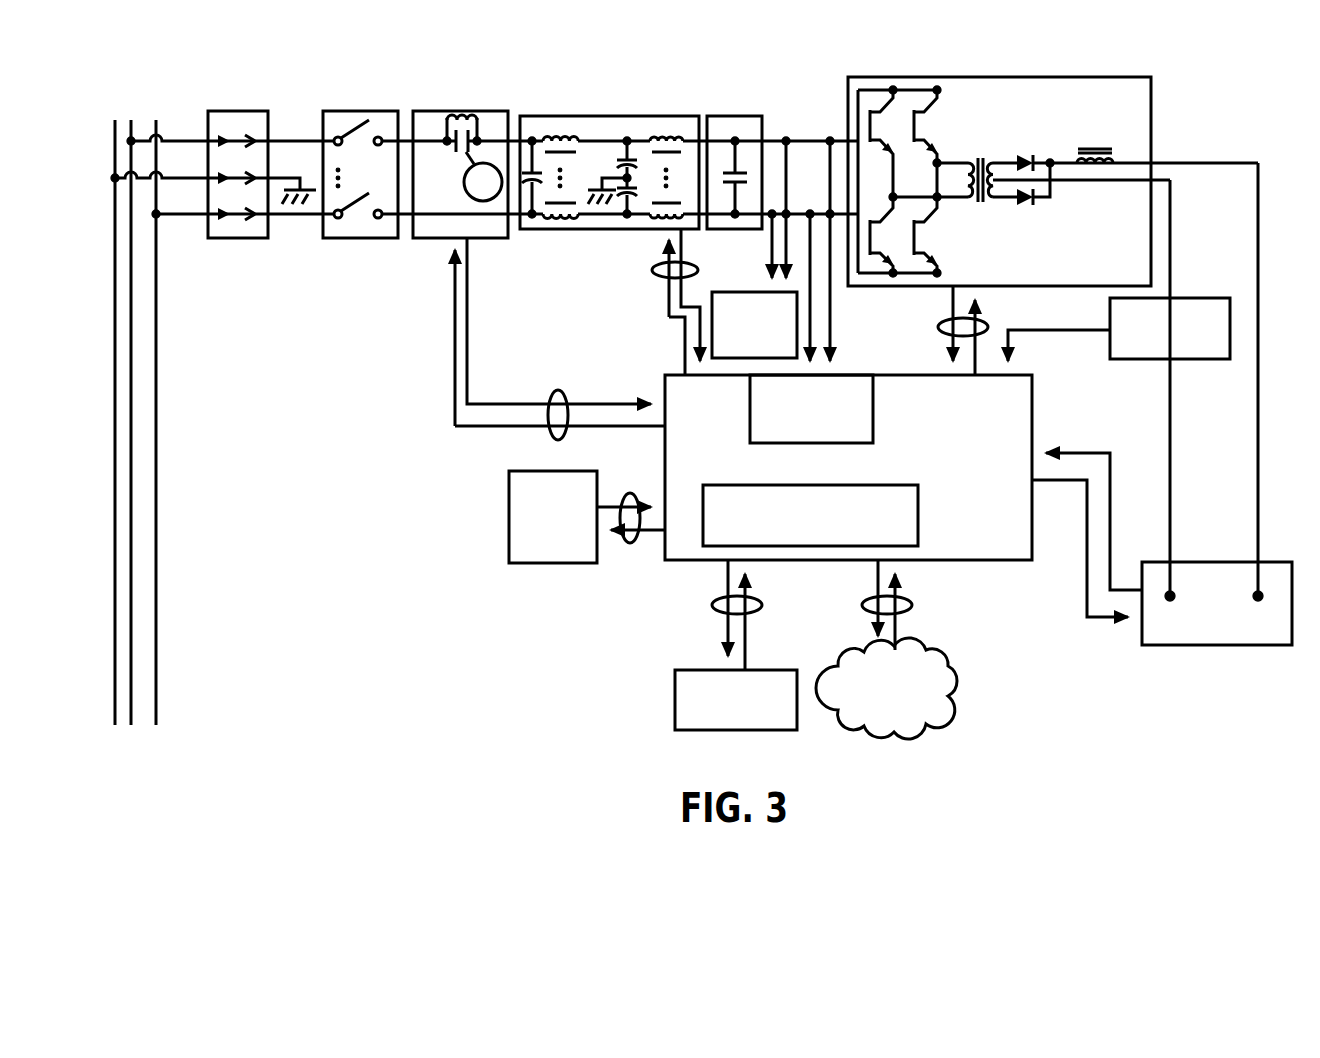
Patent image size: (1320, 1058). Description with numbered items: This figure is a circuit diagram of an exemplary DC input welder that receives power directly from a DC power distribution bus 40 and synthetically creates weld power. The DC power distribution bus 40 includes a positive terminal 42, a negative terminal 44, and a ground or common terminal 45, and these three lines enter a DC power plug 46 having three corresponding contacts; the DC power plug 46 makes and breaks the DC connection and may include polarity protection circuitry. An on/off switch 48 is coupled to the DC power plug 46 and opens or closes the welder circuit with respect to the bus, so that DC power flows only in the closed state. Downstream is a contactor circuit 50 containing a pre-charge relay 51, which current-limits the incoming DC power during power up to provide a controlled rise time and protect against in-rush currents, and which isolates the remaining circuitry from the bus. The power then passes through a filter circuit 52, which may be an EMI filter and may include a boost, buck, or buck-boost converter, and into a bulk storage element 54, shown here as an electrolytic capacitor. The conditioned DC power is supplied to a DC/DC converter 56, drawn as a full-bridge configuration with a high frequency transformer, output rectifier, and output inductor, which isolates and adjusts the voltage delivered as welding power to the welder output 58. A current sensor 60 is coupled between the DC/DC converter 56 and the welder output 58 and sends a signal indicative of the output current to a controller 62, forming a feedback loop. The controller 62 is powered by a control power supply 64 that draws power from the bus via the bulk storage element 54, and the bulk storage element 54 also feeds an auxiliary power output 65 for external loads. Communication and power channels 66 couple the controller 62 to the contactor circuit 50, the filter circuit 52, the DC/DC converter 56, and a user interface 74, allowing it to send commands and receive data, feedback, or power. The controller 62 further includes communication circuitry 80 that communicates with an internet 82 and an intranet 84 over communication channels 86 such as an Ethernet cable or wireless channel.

The DC power distribution bus 40 is at (145, 105).
The positive terminal 42 is at (131, 713).
The negative terminal 44 is at (156, 698).
The ground or common terminal 45 is at (115, 715).
The DC power plug 46 is at (238, 111).
The on/off switch 48 is at (355, 111).
The contactor circuit 50 is at (458, 187).
The pre-charge relay 51 is at (448, 194).
The filter circuit 52 is at (608, 116).
The bulk storage element 54 is at (735, 116).
The DC/DC converter 56 is at (1000, 77).
The welder output 58 is at (1215, 645).
The current sensor 60 is at (1140, 359).
The controller 62 is at (876, 467).
The control power supply 64 is at (873, 410).
The auxiliary power output 65 is at (757, 292).
The communication and power channels 66 is at (652, 270).
The user interface 74 is at (553, 471).
The communication circuitry 80 is at (765, 485).
The internet 82 is at (955, 680).
The intranet 84 is at (675, 695).
The communication channels 86 is at (715, 605).